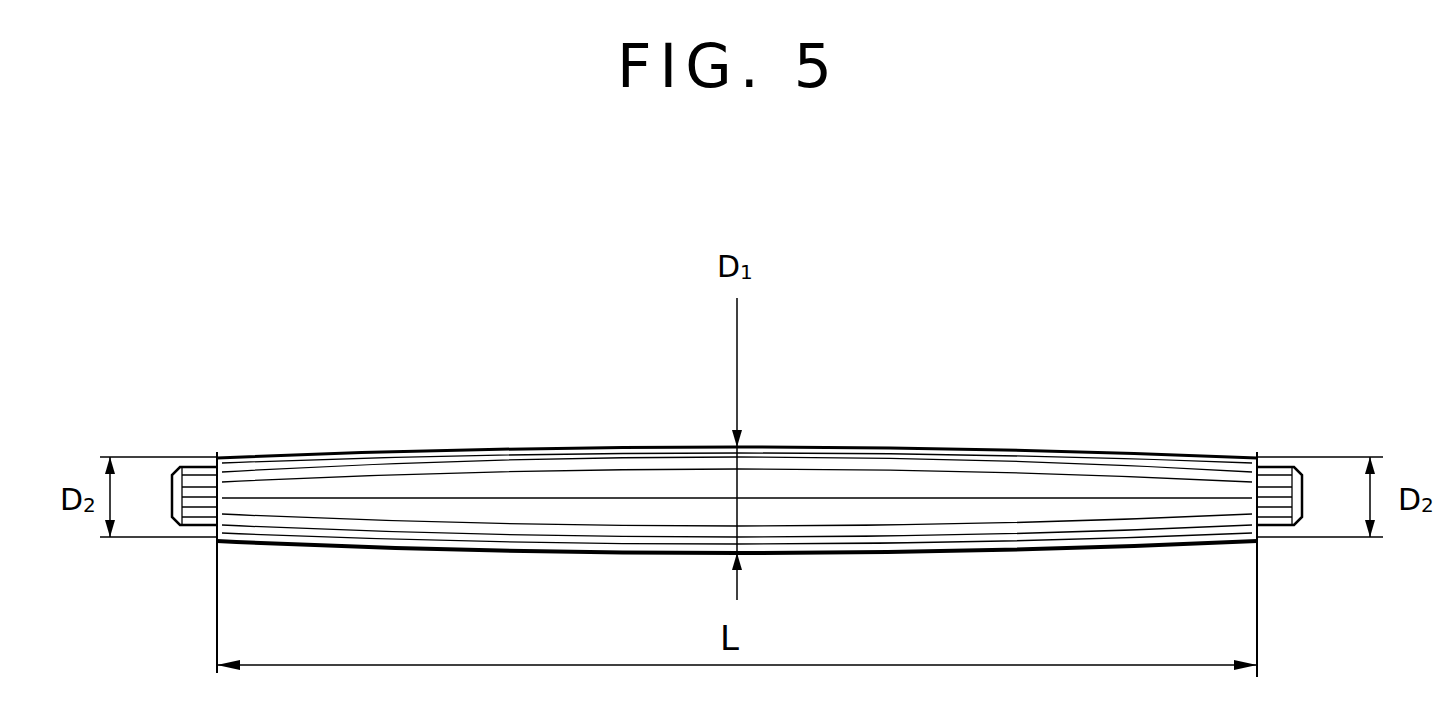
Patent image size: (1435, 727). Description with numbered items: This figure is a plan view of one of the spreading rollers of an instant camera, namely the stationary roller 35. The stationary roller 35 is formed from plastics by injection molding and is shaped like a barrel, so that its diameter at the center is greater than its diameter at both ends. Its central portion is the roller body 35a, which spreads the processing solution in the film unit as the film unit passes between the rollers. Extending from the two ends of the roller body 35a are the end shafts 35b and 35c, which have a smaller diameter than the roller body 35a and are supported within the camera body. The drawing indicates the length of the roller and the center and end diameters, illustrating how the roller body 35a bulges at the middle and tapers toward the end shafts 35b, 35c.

The stationary roller 35 is at (742, 495).
The roller body 35a is at (586, 477).
The end shaft 35b is at (1276, 487).
The end shaft 35c is at (200, 487).